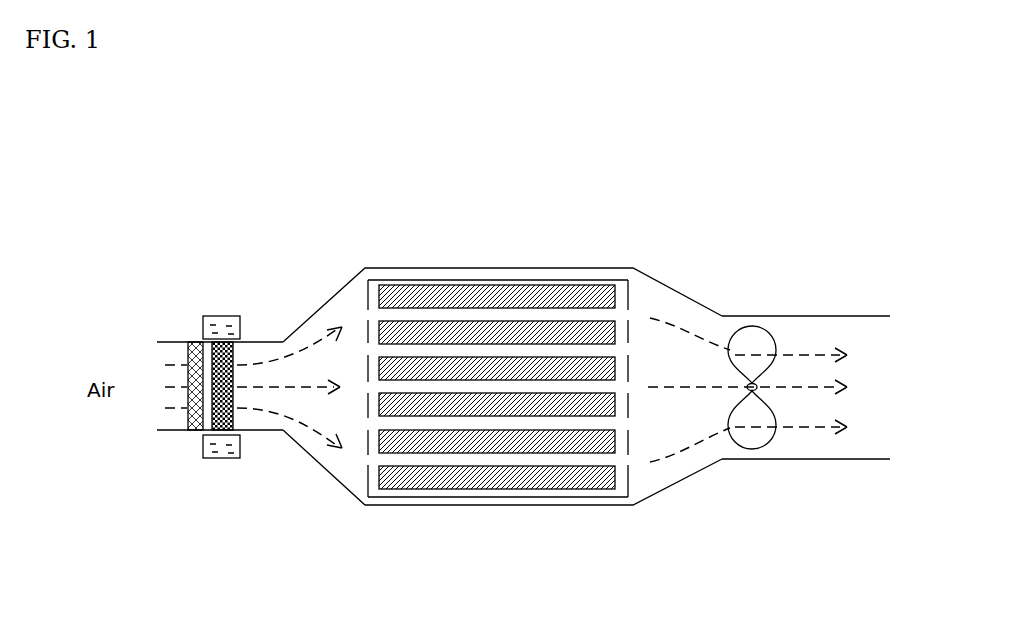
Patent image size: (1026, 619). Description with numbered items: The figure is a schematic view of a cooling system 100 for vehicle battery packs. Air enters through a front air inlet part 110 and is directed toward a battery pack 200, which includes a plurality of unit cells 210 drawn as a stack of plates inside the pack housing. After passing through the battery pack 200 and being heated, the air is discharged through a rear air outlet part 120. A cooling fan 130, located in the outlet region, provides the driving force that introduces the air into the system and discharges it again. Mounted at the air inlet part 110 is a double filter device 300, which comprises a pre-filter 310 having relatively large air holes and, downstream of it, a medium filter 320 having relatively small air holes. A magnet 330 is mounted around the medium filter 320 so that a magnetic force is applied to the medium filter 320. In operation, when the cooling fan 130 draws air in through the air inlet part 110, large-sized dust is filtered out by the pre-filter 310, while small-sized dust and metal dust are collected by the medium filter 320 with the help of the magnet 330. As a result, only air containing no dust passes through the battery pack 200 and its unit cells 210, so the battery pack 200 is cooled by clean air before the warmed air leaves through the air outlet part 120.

The cooling system 100 is at (638, 220).
The front air inlet part 110 is at (163, 342).
The rear air outlet part 120 is at (832, 316).
The cooling fan 130 is at (773, 442).
The battery pack 200 is at (453, 279).
The unit cells 210 is at (552, 478).
The double filter device 300 is at (203, 380).
The pre-filter 310 is at (185, 430).
The medium filter 320 is at (233, 430).
The magnet 330 is at (227, 315).